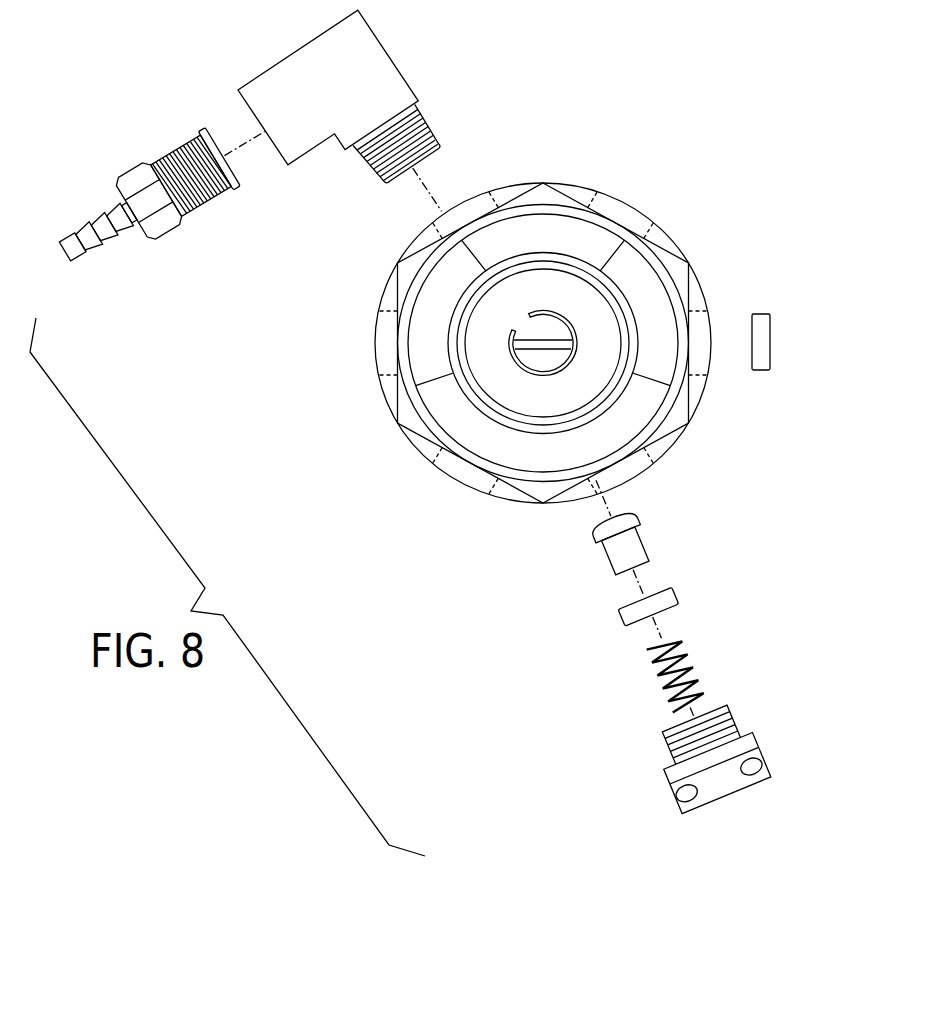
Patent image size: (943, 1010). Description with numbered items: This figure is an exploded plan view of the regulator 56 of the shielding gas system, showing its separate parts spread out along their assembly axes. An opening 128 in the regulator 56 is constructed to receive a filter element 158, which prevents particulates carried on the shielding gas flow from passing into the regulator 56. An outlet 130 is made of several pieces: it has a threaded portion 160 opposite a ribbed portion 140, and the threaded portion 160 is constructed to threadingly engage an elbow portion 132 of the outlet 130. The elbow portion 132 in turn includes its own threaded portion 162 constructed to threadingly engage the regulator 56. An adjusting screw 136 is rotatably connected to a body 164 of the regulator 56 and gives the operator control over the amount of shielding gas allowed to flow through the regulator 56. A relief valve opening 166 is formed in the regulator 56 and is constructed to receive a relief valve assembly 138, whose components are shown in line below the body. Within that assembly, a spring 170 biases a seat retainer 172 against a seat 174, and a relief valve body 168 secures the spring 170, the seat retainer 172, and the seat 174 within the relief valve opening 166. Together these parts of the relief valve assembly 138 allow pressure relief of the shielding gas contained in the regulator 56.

The regulator 56 is at (571, 312).
The opening 128 is at (727, 358).
The outlet 130 is at (355, 134).
The elbow portion 132 is at (355, 94).
The adjusting screw 136 is at (527, 368).
The relief valve assembly 138 is at (663, 647).
The ribbed portion 140 is at (147, 162).
The filter element 158 is at (763, 350).
The threaded portion 160 is at (173, 147).
The threaded portion 162 is at (428, 128).
The body 164 is at (563, 249).
The relief valve opening 166 is at (613, 490).
The relief valve body 168 is at (681, 775).
The spring 170 is at (688, 656).
The seat retainer 172 is at (678, 593).
The seat 174 is at (634, 551).